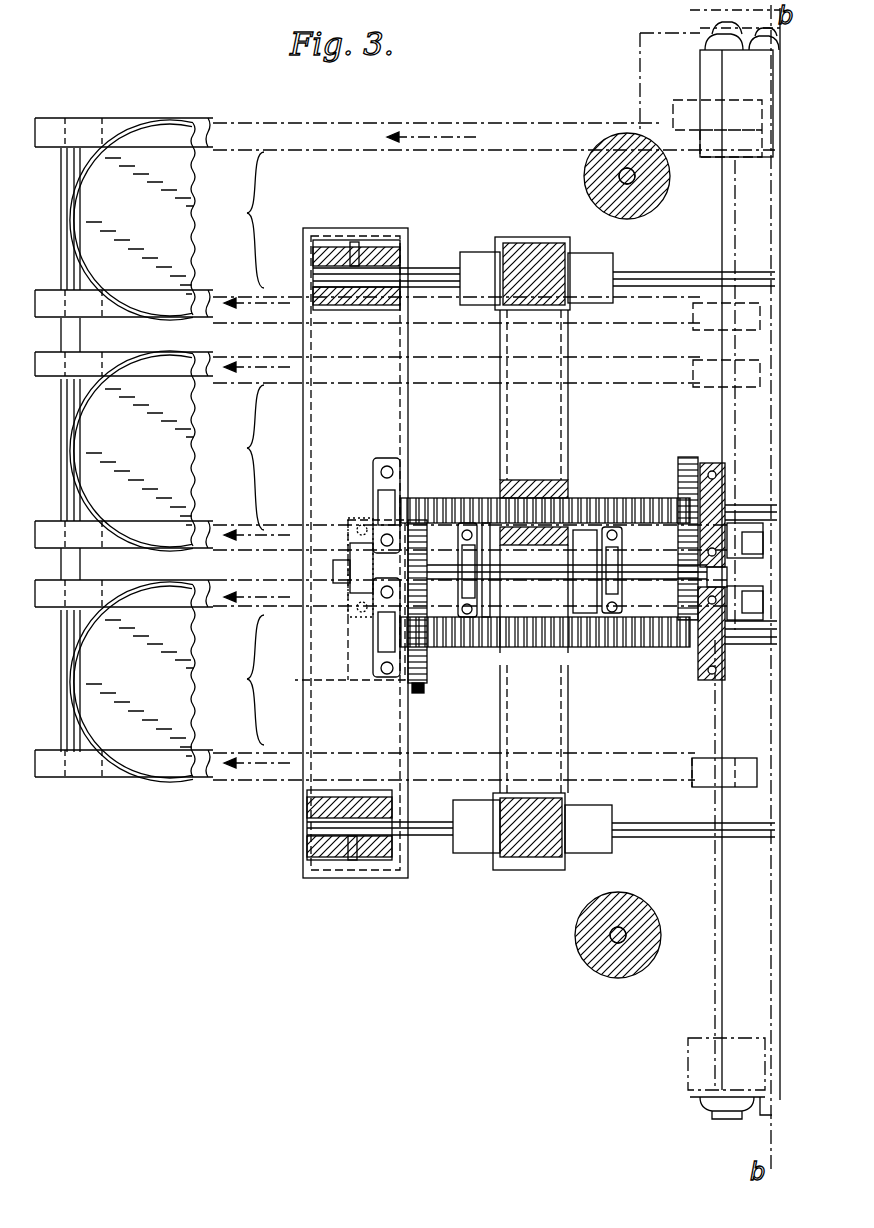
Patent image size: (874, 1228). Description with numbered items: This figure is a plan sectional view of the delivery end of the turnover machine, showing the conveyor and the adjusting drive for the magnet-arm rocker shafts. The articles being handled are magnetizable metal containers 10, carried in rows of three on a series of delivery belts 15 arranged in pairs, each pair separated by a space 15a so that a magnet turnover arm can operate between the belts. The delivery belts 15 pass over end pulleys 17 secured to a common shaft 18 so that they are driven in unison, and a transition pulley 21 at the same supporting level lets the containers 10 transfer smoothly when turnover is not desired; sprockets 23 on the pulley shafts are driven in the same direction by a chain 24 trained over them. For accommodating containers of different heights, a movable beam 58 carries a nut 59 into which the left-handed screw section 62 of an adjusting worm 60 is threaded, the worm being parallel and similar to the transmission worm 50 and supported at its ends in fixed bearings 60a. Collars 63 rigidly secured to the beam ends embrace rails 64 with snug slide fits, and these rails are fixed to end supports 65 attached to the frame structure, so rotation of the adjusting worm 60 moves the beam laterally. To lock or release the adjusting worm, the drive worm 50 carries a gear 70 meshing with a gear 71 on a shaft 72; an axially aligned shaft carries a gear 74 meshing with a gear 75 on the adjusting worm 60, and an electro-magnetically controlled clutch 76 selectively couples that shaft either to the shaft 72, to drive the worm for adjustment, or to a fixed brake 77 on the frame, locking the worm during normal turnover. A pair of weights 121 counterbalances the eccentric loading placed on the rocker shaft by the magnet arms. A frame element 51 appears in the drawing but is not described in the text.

The containers 10 is at (92, 162).
The delivery belts 15 is at (62, 118).
The space 15a is at (234, 448).
The end pulleys 17 is at (674, 130).
The common shaft 18 is at (722, 212).
The transition pulley 21 is at (770, 194).
The sprockets 23 is at (722, 22).
The chain 24 is at (690, 10).
The transmission worm 50 is at (764, 638).
The frame 51 is at (375, 648).
The movable beam 58 is at (536, 240).
The nut 59 is at (524, 498).
The adjusting worm 60 is at (424, 498).
The fixed bearings 60a is at (373, 490).
The left-handed screw section 62 is at (646, 498).
The collars 63 is at (466, 252).
The rails 64 is at (431, 270).
The fixed end supports 65 is at (330, 247).
The gear 70 is at (418, 694).
The gear 71 is at (462, 520).
The shaft 72 is at (332, 570).
The gear 74 is at (684, 572).
The gear 75 is at (682, 456).
The electro-magnetically controlled clutch 76 is at (582, 588).
The fixed brake 77 is at (608, 561).
The weights 121 is at (584, 184).